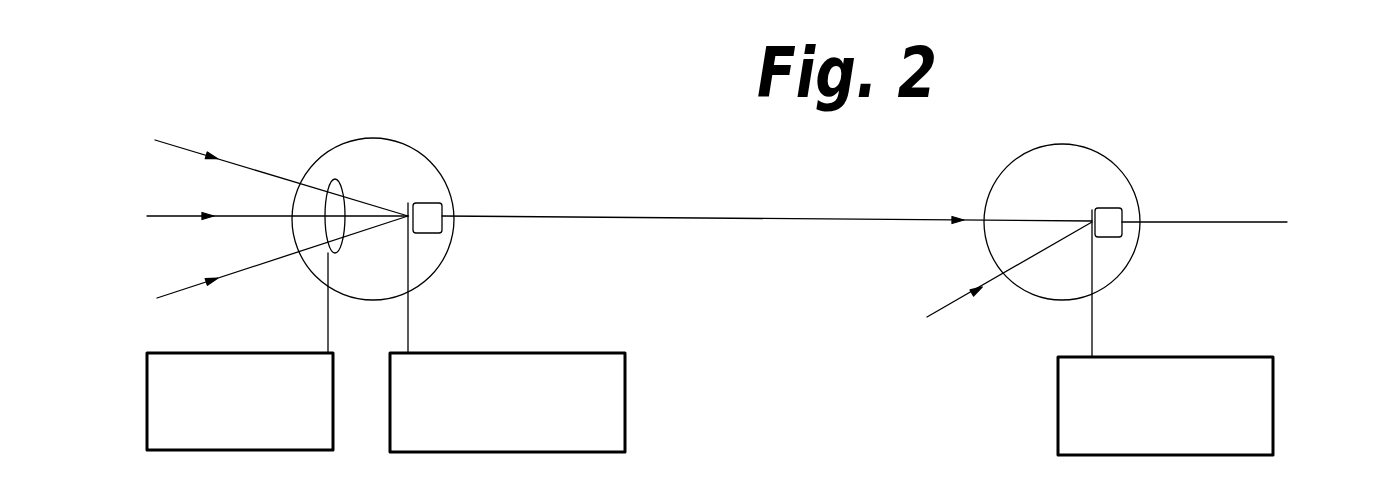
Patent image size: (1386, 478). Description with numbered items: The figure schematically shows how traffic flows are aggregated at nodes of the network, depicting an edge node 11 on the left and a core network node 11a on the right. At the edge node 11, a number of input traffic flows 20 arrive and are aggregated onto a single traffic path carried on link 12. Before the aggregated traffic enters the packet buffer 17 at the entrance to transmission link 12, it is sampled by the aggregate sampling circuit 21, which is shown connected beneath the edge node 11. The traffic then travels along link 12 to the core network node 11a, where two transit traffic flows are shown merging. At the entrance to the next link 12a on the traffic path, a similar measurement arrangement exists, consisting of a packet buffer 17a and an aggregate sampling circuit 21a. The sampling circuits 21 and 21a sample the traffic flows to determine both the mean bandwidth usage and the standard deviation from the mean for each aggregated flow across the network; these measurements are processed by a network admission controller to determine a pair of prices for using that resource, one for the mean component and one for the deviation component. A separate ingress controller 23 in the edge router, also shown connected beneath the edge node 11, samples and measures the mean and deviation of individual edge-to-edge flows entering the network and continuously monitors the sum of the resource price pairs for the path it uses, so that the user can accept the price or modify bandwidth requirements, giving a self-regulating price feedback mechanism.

The edge node 11 is at (377, 138).
The core network node 11a is at (1082, 145).
The link 12 is at (710, 220).
The next link 12a is at (1240, 222).
The packet buffer 17 is at (428, 202).
The packet buffer 17a is at (1110, 222).
The input traffic flows 20 is at (193, 148).
The aggregate sampling circuit 21 is at (607, 360).
The aggregate sampling circuit 21a is at (1227, 363).
The ingress controller 23 is at (263, 353).